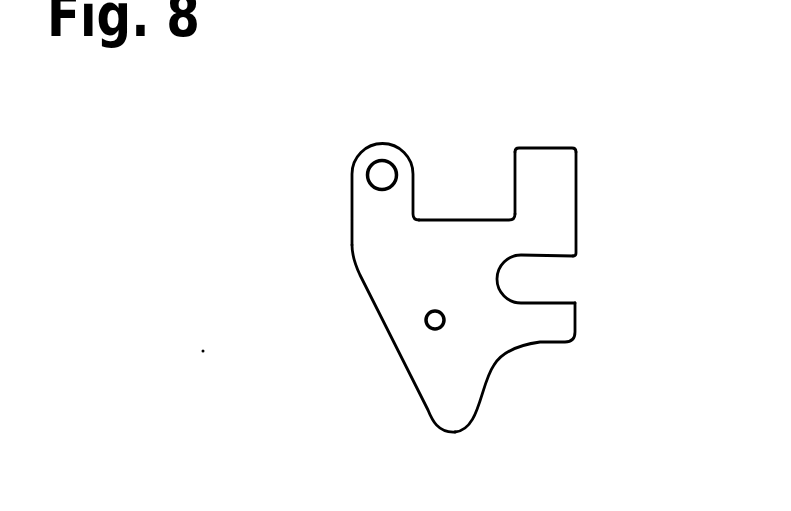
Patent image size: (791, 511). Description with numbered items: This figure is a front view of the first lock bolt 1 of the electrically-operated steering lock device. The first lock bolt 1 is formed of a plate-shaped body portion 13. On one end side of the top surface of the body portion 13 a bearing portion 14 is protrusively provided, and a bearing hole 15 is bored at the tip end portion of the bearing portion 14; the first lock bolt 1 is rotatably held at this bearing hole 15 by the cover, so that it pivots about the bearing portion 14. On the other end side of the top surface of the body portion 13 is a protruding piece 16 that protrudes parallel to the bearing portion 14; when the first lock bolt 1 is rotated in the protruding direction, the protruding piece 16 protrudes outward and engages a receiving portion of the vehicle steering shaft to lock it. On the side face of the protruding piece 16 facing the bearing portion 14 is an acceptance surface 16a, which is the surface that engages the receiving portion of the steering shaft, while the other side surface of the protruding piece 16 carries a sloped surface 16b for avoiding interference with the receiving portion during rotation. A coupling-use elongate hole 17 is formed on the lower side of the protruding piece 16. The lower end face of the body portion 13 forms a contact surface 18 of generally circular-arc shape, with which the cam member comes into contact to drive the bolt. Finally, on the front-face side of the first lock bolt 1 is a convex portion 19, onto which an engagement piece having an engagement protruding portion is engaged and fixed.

The first lock bolt 1 is at (333, 191).
The body portion 13 is at (410, 271).
The bearing portion 14 is at (378, 210).
The bearing hole 15 is at (378, 172).
The protruding piece 16 is at (543, 163).
The acceptance surface 16a is at (514, 162).
The sloped surface 16b is at (579, 156).
The coupling-use elongate hole 17 is at (549, 256).
The contact surface 18 is at (496, 361).
The convex portion 19 is at (433, 331).